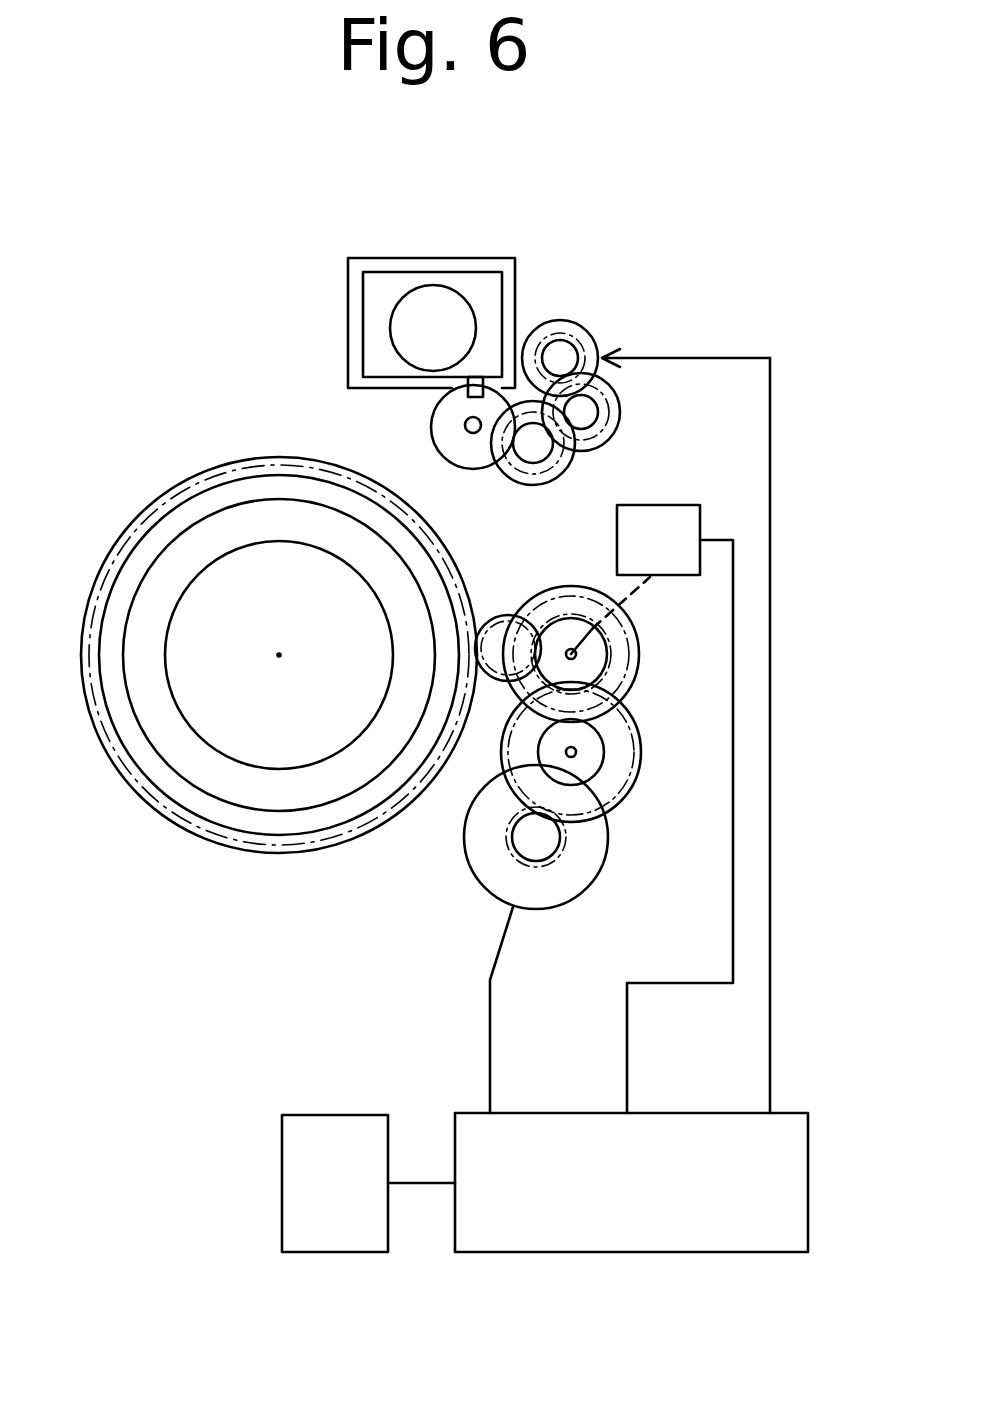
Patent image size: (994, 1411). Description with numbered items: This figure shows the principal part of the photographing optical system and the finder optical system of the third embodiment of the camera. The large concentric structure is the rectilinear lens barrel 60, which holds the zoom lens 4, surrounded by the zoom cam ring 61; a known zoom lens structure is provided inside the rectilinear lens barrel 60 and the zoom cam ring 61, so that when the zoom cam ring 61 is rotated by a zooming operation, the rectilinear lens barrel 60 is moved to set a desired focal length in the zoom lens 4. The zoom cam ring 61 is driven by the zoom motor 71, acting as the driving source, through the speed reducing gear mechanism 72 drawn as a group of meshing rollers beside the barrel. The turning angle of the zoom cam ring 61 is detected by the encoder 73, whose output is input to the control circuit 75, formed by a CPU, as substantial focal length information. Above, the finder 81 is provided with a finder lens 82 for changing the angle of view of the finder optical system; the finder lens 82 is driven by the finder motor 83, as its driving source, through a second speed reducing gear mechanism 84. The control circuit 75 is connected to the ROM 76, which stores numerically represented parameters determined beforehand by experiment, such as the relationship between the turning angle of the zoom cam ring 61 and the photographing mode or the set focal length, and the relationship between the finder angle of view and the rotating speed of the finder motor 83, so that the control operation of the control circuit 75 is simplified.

The zoom lens 4 is at (200, 700).
The rectilinear lens barrel 60 is at (233, 773).
The zoom cam ring 61 is at (312, 847).
The zoom motor 71 is at (477, 882).
The speed reducing gear mechanism 72 is at (652, 632).
The encoder 73 is at (637, 537).
The control circuit 75 is at (652, 1253).
The ROM 76 is at (335, 1253).
The finder 81 is at (357, 273).
The finder lens 82 is at (437, 300).
The finder motor 83 is at (572, 330).
The speed reducing gear mechanism 84 is at (635, 420).